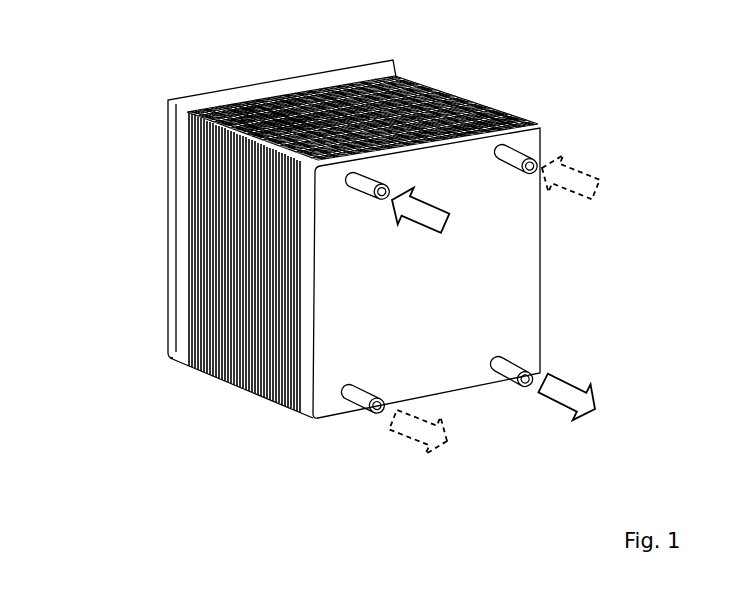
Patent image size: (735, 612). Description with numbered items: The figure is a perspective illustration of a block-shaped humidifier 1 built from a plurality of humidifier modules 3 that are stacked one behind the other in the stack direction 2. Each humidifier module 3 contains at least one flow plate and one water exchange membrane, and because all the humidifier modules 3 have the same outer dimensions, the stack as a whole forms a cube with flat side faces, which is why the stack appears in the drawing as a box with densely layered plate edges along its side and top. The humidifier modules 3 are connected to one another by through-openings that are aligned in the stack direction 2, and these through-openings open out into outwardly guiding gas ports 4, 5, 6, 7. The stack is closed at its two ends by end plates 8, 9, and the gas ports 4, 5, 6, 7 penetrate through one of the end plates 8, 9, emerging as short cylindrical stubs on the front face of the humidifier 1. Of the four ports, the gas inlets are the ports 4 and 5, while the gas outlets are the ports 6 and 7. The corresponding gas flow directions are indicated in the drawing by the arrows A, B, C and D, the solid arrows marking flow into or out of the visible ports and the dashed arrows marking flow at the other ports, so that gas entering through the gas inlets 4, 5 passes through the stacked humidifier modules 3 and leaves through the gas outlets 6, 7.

The humidifier 1 is at (375, 281).
The stack direction 2 is at (146, 231).
The humidifier modules 3 is at (463, 91).
The gas inlet 4 is at (365, 188).
The gas inlet 5 is at (513, 155).
The gas outlet 6 is at (365, 403).
The gas outlet 7 is at (513, 372).
The end plate 8 is at (171, 358).
The end plate 9 is at (302, 380).